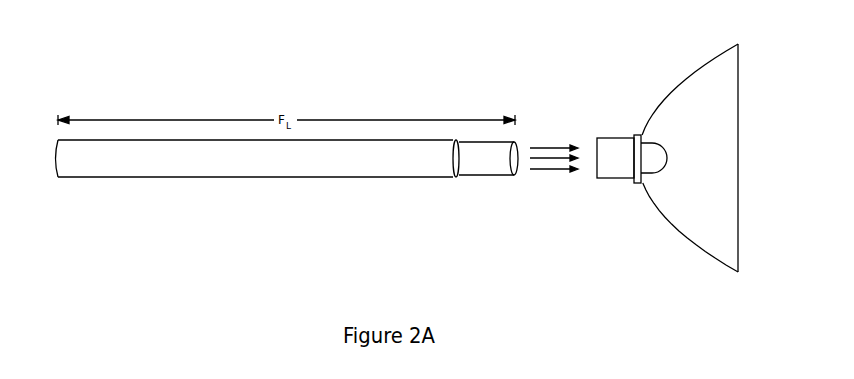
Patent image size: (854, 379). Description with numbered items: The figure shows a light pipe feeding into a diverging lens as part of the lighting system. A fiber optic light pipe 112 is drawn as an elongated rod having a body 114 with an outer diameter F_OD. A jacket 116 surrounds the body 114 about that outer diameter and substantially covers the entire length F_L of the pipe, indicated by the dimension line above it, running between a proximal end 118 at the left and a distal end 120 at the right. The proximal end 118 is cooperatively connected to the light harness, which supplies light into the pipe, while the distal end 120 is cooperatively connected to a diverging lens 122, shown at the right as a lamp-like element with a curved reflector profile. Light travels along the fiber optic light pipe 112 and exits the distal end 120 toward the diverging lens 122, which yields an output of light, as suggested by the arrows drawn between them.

The fiber optic light pipe 112 is at (332, 82).
The body 114 is at (501, 182).
The jacket 116 is at (258, 180).
The proximal end 118 is at (60, 185).
The distal end 120 is at (492, 187).
The diverging lens 122 is at (650, 240).